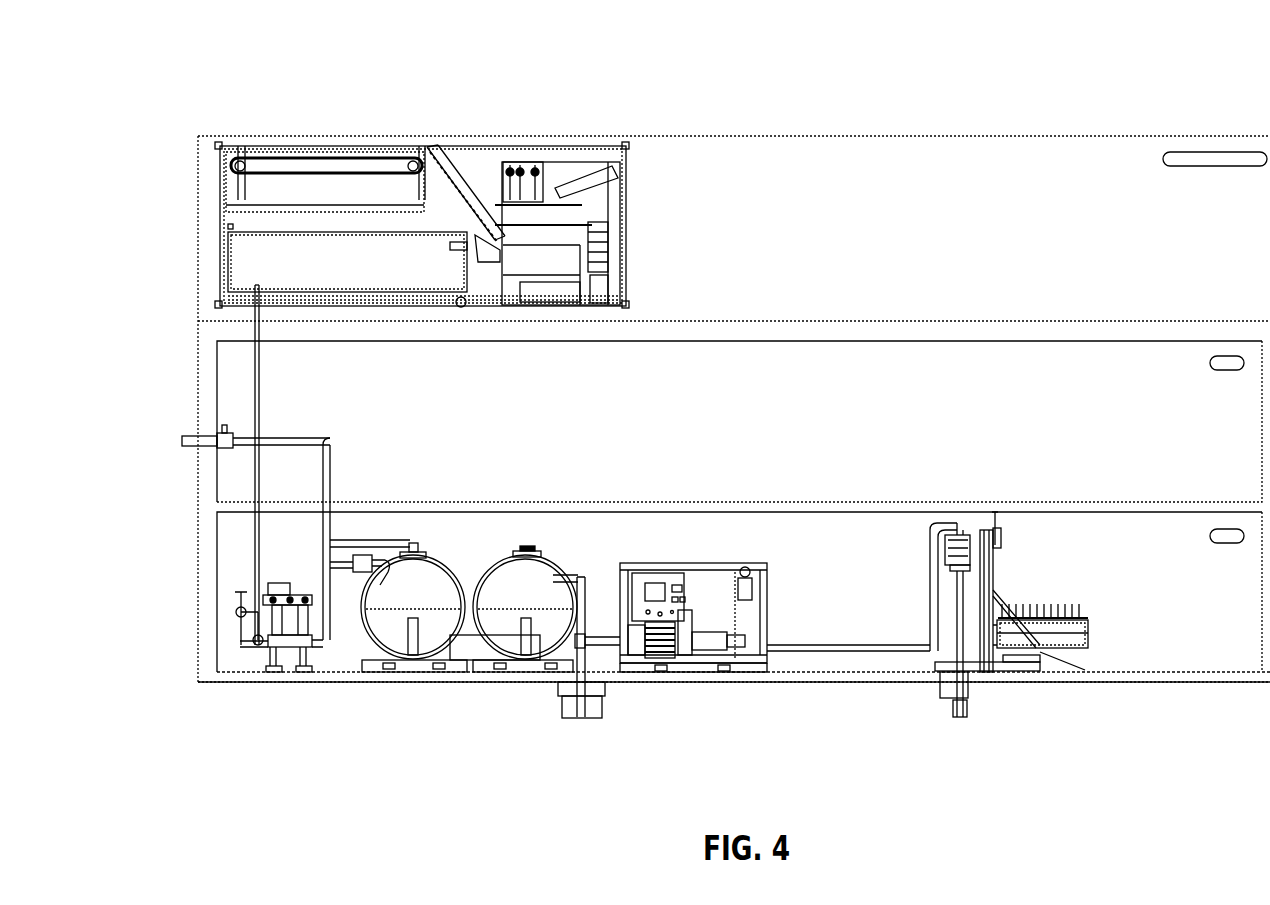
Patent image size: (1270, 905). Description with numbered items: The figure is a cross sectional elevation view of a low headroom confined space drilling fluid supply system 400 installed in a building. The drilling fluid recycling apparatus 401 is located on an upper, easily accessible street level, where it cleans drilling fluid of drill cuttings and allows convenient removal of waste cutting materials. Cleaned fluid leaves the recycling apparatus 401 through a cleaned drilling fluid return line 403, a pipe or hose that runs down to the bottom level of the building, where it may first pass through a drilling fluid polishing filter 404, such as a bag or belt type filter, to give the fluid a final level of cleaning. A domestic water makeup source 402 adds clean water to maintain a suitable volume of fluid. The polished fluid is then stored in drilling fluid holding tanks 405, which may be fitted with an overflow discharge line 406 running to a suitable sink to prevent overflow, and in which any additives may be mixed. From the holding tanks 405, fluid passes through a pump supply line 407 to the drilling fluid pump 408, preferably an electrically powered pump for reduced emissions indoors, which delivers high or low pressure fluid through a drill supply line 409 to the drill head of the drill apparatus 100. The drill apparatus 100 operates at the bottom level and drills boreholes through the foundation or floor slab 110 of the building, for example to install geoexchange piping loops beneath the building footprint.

The low headroom confined space drilling fluid supply system 400 is at (726, 107).
The drilling fluid recycling apparatus 401 is at (630, 267).
The domestic water makeup source 402 is at (218, 430).
The cleaned drilling fluid return line 403 is at (260, 387).
The drilling fluid polishing filter 404 is at (278, 580).
The drilling fluid holding tank 405 is at (515, 550).
The overflow discharge line 406 is at (585, 572).
The pump supply line 407 is at (596, 634).
The drilling fluid pump 408 is at (718, 562).
The drill supply line 409 is at (950, 523).
The drill apparatus 100 is at (1045, 583).
The floor slab 110 is at (1158, 676).